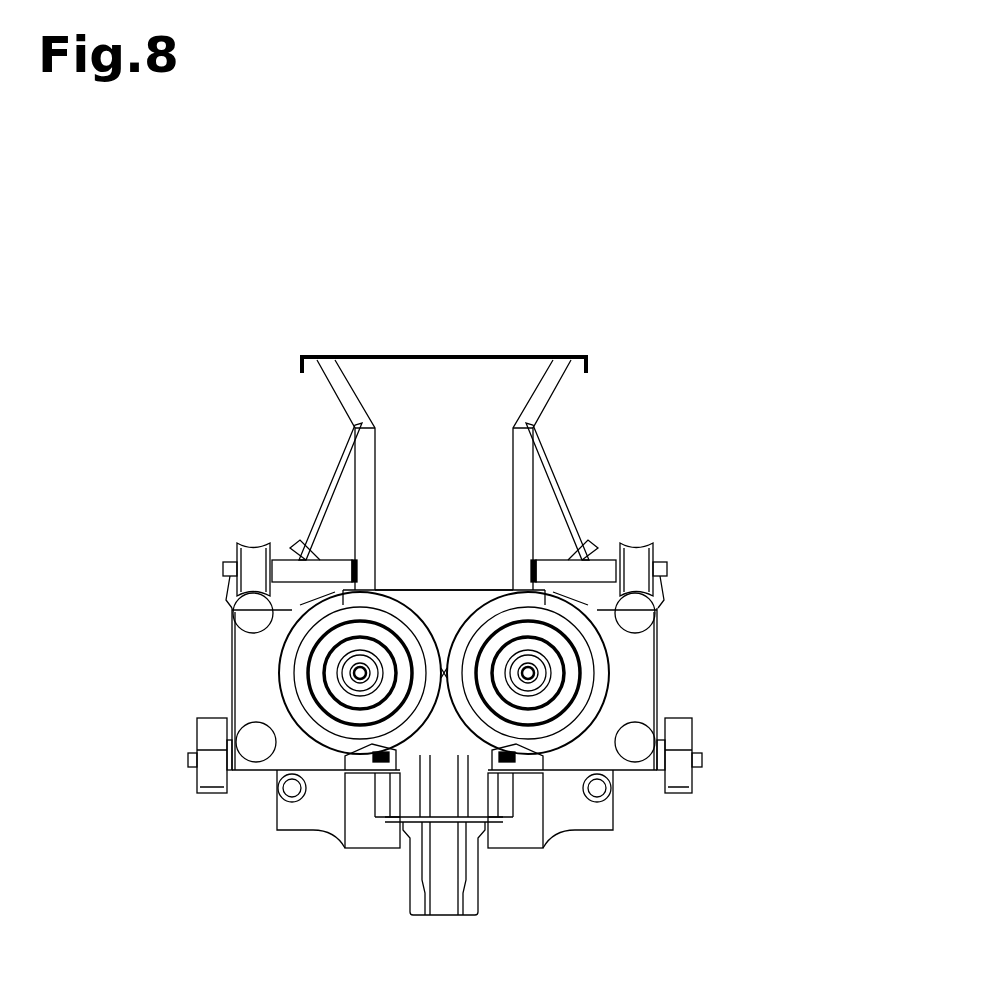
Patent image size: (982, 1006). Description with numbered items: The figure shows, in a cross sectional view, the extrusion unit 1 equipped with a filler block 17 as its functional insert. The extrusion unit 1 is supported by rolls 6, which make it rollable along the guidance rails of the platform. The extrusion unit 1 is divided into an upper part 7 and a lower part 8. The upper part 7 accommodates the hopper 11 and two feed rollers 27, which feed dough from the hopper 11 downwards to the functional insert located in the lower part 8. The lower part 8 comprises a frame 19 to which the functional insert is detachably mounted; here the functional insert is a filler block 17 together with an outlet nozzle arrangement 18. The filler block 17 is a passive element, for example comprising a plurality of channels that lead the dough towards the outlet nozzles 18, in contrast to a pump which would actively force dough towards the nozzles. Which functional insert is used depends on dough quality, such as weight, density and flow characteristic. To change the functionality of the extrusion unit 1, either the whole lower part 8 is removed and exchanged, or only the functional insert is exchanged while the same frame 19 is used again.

The extrusion unit 1 is at (699, 366).
The upper part 7 is at (802, 353).
The lower part 8 is at (802, 773).
The hopper 11 is at (560, 381).
The feed rollers 27 is at (280, 672).
The rolls 6 is at (197, 778).
The frame 19 is at (347, 834).
The filler block 17 is at (495, 798).
The outlet nozzles 18 is at (480, 892).